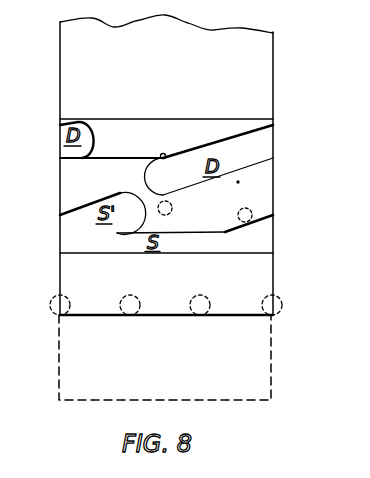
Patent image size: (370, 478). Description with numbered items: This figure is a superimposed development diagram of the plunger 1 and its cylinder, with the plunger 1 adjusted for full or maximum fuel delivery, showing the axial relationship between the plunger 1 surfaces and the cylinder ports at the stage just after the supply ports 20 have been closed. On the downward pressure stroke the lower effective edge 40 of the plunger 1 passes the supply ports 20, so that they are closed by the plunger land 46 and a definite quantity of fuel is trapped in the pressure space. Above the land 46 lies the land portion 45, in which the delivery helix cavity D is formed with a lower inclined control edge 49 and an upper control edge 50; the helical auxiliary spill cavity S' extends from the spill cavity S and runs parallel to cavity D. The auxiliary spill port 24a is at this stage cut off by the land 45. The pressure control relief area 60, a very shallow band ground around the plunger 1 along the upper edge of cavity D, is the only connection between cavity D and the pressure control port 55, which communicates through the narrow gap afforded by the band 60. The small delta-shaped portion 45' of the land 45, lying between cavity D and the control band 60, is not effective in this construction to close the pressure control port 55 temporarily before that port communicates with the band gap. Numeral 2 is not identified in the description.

The plunger 1 is at (180, 60).
The land portion 45 is at (166, 147).
The pressure control relief area 60 is at (132, 137).
The upper control edge 50 is at (253, 132).
The pressure control port 55 is at (166, 154).
The delta-shaped portion 45' is at (169, 176).
The lower inclined control edge 49 is at (240, 168).
The auxiliary spill port 24a is at (252, 208).
The land 46 is at (185, 284).
The supply ports 20 is at (187, 304).
The lower effective edge 40 is at (223, 317).
The pixel region 2 is at (59, 340).